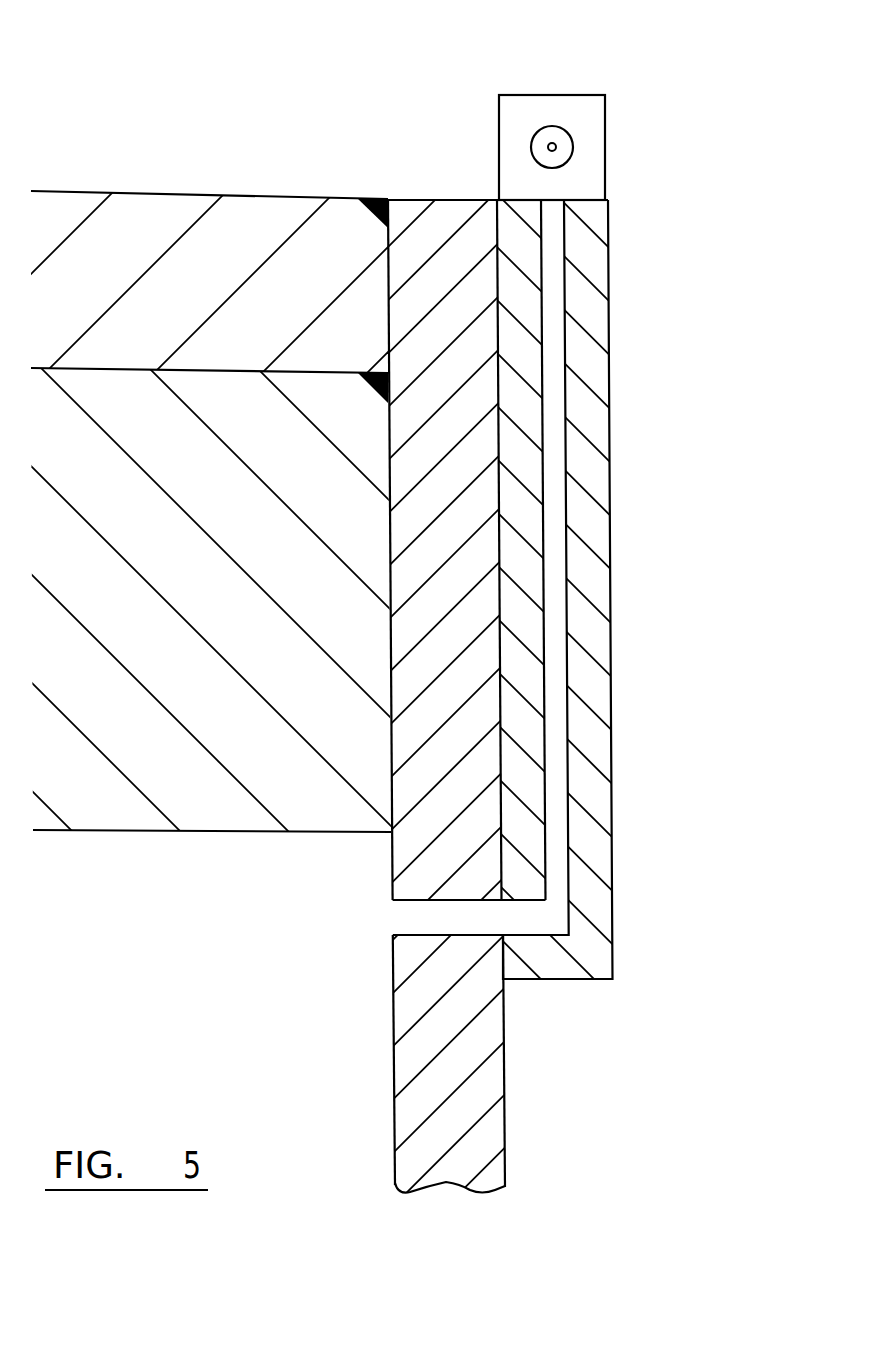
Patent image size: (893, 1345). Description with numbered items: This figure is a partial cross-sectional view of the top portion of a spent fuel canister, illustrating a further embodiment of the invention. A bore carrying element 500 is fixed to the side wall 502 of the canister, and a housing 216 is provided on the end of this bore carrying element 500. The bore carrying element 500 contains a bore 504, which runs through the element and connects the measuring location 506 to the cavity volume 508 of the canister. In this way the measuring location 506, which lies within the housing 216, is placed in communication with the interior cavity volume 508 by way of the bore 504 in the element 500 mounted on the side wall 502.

The housing 216 is at (615, 106).
The bore carrying element 500 is at (612, 592).
The side wall 502 is at (458, 796).
The bore 504 is at (557, 462).
The measuring location 506 is at (570, 147).
The cavity volume 508 is at (252, 975).